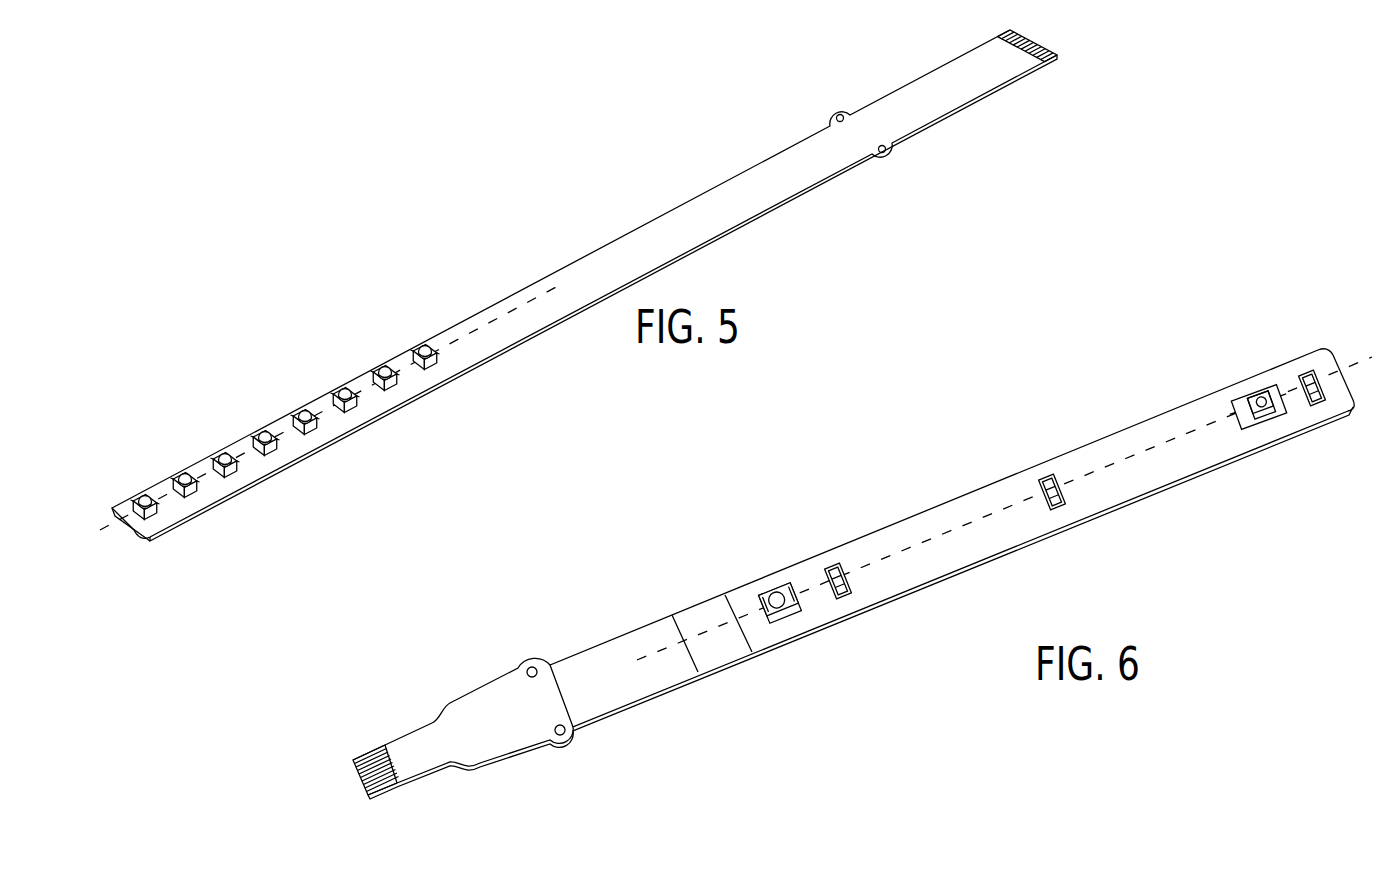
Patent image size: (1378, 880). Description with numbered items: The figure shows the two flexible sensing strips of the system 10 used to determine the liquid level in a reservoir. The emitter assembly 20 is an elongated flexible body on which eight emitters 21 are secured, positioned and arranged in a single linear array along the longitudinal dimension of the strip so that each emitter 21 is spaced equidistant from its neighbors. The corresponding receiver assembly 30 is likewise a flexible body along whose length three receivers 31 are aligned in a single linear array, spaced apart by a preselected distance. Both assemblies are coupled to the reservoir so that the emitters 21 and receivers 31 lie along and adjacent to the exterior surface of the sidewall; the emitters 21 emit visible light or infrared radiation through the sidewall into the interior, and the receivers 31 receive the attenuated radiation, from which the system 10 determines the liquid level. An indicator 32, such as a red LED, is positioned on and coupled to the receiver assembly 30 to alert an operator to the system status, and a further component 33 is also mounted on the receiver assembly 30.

In FIG. 5, the system 10 is at (698, 103).
In FIG. 6, the system 10 is at (1052, 380).
In FIG. 5, the emitter assembly 20 is at (586, 278).
In FIG. 5, the emitter 21 is at (143, 494).
In FIG. 6, the receiver assembly 30 is at (940, 528).
In FIG. 6, the receiver 31 is at (845, 595).
In FIG. 6, the indicator 32 is at (787, 612).
In FIG. 6, the electronic component 33 is at (1262, 401).